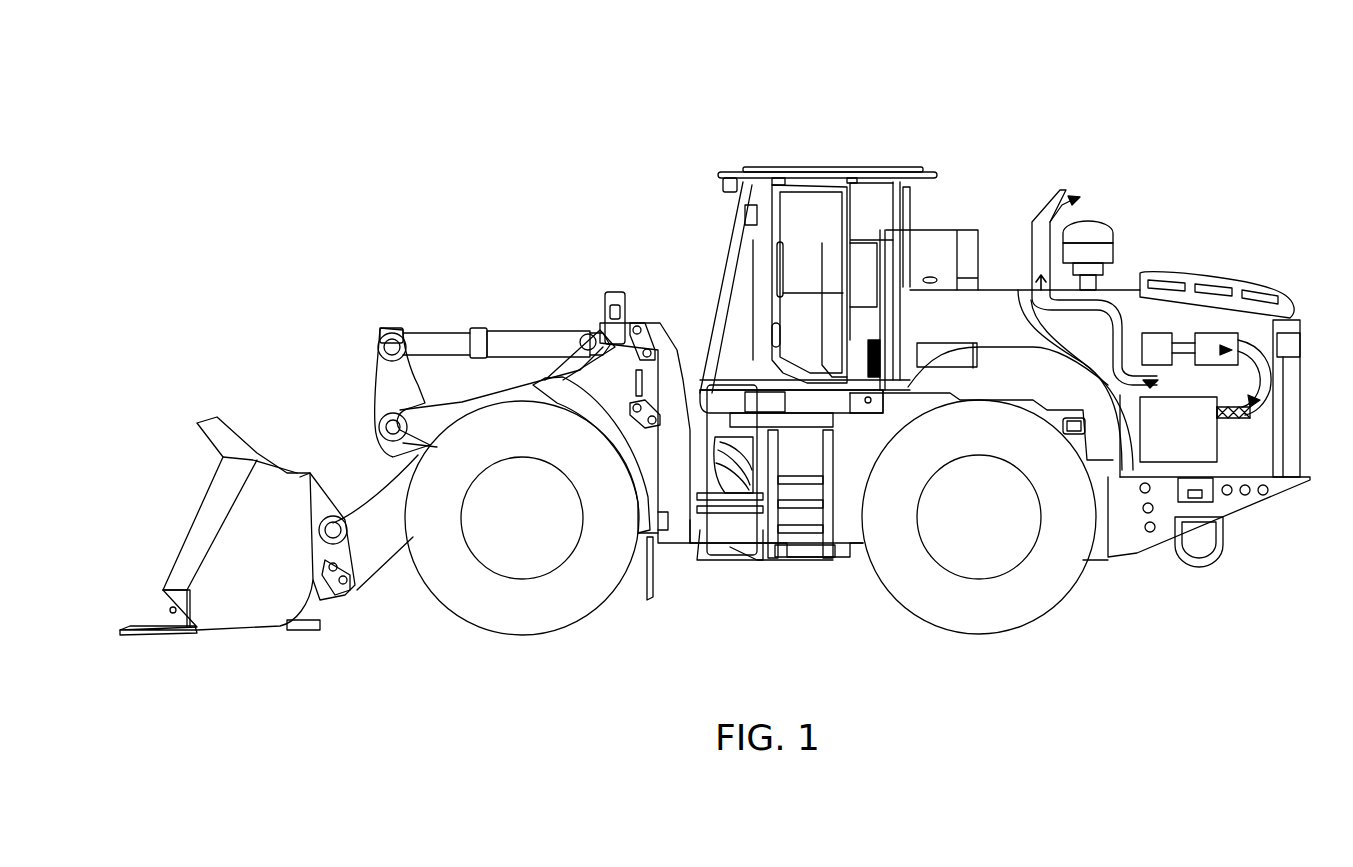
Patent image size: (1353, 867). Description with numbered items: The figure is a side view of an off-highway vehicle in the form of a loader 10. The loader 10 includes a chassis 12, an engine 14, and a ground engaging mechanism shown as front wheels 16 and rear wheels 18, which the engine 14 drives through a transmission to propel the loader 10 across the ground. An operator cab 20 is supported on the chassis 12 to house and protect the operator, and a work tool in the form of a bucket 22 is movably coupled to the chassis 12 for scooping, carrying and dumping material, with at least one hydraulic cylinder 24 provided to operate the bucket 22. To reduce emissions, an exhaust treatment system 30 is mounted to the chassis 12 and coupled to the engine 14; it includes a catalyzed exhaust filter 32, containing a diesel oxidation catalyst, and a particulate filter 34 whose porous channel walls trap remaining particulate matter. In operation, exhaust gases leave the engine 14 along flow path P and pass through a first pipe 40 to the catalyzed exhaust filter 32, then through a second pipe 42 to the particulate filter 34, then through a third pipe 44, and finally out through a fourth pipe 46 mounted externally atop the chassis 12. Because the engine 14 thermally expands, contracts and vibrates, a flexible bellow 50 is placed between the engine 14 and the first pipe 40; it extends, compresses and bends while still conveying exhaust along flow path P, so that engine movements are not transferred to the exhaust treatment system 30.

The loader 10 is at (1040, 103).
The chassis 12 is at (845, 547).
The engine 14 is at (1175, 455).
The front wheels 16 is at (530, 617).
The rear wheels 18 is at (982, 617).
The operator cab 20 is at (817, 166).
The bucket 22 is at (238, 617).
The hydraulic cylinder 24 is at (510, 340).
The exhaust treatment system 30 is at (1252, 222).
The catalyzed exhaust filter 32 is at (1232, 338).
The particulate filter 34 is at (1152, 335).
The first pipe 40 is at (1265, 382).
The second pipe 42 is at (1183, 347).
The third pipe 44 is at (1105, 302).
The fourth pipe 46 is at (1037, 222).
The bellow 50 is at (1228, 420).
The flow path P is at (1250, 420).